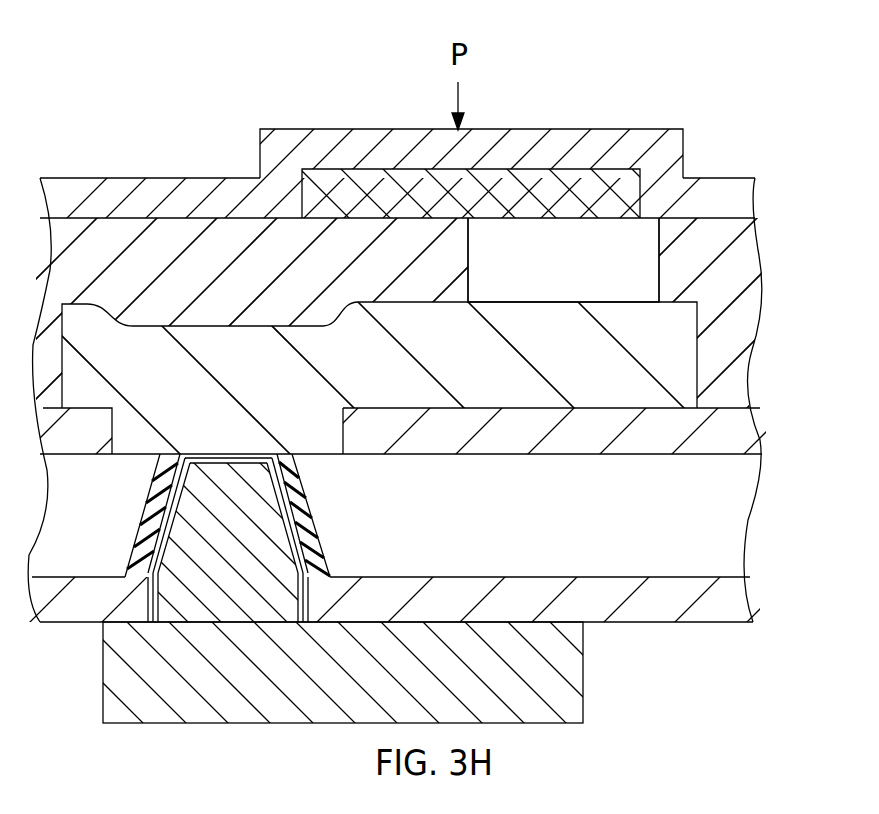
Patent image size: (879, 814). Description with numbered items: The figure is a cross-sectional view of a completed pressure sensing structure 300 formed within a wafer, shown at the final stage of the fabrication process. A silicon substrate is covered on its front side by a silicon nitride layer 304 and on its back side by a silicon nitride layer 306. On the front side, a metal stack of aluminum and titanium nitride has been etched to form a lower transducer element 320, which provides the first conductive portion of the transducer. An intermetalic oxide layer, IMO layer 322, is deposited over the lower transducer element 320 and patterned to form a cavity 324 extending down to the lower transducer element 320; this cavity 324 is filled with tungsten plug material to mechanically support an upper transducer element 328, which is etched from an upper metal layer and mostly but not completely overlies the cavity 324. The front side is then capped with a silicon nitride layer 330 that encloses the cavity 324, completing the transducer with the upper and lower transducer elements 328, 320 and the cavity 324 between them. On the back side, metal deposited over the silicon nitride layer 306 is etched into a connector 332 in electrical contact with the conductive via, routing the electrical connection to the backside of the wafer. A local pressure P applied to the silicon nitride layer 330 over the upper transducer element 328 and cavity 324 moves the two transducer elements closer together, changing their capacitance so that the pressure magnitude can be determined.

The pressure sensing structure 300 is at (784, 60).
The silicon nitride layer 304 is at (750, 435).
The silicon nitride layer 306 is at (740, 613).
The lower transducer element 320 is at (685, 353).
The IMO layer 322 is at (735, 260).
The cavity 324 is at (635, 248).
The upper transducer element 328 is at (498, 173).
The silicon nitride layer 330 is at (635, 137).
The connector 332 is at (573, 672).